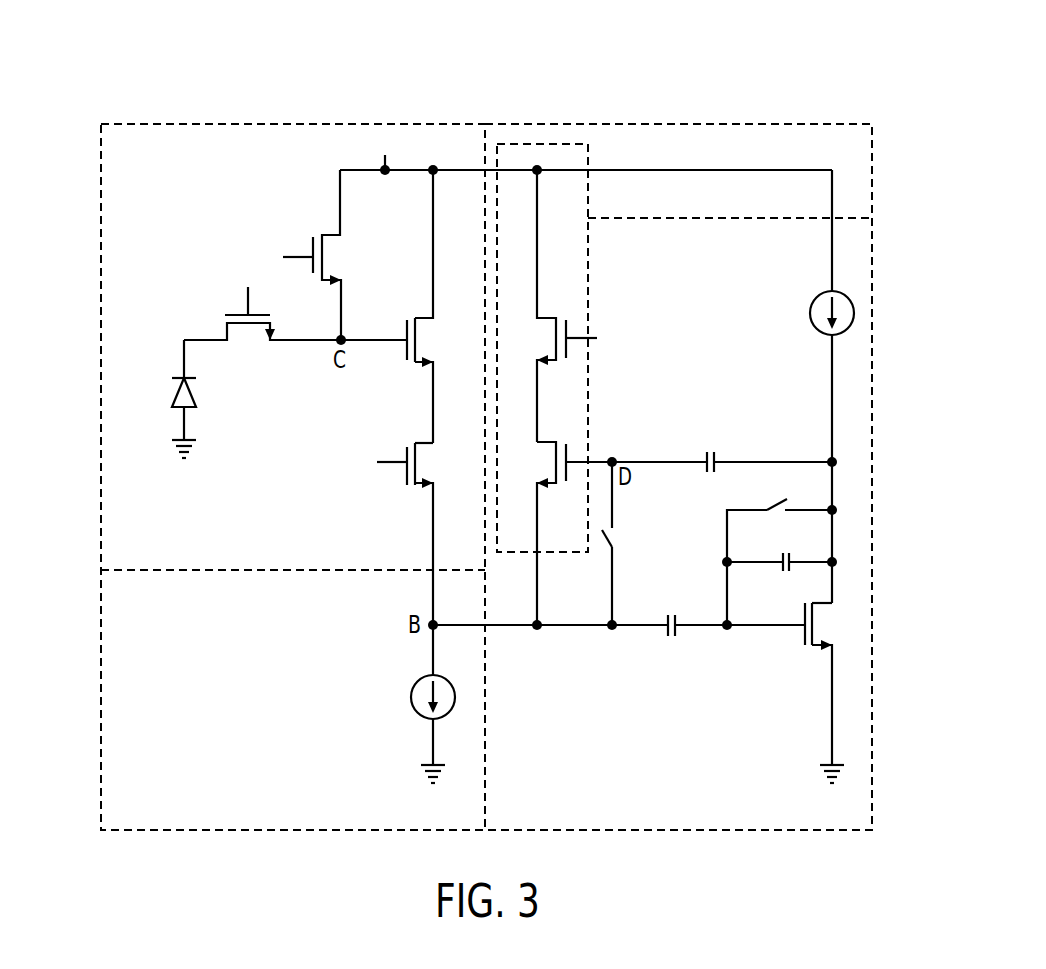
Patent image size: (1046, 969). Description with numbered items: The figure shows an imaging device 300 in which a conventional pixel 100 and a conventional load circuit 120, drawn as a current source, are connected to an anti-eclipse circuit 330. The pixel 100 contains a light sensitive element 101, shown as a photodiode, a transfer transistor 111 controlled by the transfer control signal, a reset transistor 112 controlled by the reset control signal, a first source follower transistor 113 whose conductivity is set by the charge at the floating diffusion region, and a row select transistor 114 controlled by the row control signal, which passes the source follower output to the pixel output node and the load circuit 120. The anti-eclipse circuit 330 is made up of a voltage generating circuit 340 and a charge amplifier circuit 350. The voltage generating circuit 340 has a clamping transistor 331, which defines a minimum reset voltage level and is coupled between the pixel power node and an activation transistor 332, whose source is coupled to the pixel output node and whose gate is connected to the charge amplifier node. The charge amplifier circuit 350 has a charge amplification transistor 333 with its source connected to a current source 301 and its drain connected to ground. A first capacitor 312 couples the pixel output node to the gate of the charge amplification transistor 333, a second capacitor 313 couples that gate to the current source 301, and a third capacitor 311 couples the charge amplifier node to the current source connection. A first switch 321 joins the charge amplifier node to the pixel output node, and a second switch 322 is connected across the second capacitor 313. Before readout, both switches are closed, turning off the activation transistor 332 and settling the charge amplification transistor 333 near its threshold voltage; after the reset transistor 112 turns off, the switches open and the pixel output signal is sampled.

The imaging device 300 is at (263, 78).
The pixel 100 is at (101, 465).
The light sensitive element 101 is at (190, 395).
The transfer transistor 111 is at (227, 330).
The reset transistor 112 is at (328, 234).
The first source follower transistor 113 is at (415, 318).
The row select transistor 114 is at (415, 440).
The load circuit 120 is at (412, 705).
The current source 301 is at (820, 297).
The third capacitor 311 is at (717, 460).
The first capacitor 312 is at (676, 630).
The second capacitor 313 is at (778, 570).
The first switch 321 is at (601, 538).
The second switch 322 is at (778, 500).
The anti-eclipse circuit 330 is at (873, 450).
The clamping transistor 331 is at (548, 317).
The activation transistor 332 is at (548, 440).
The charge amplification transistor 333 is at (805, 643).
The voltage generating circuit 340 is at (567, 135).
The charge amplifier circuit 350 is at (708, 218).